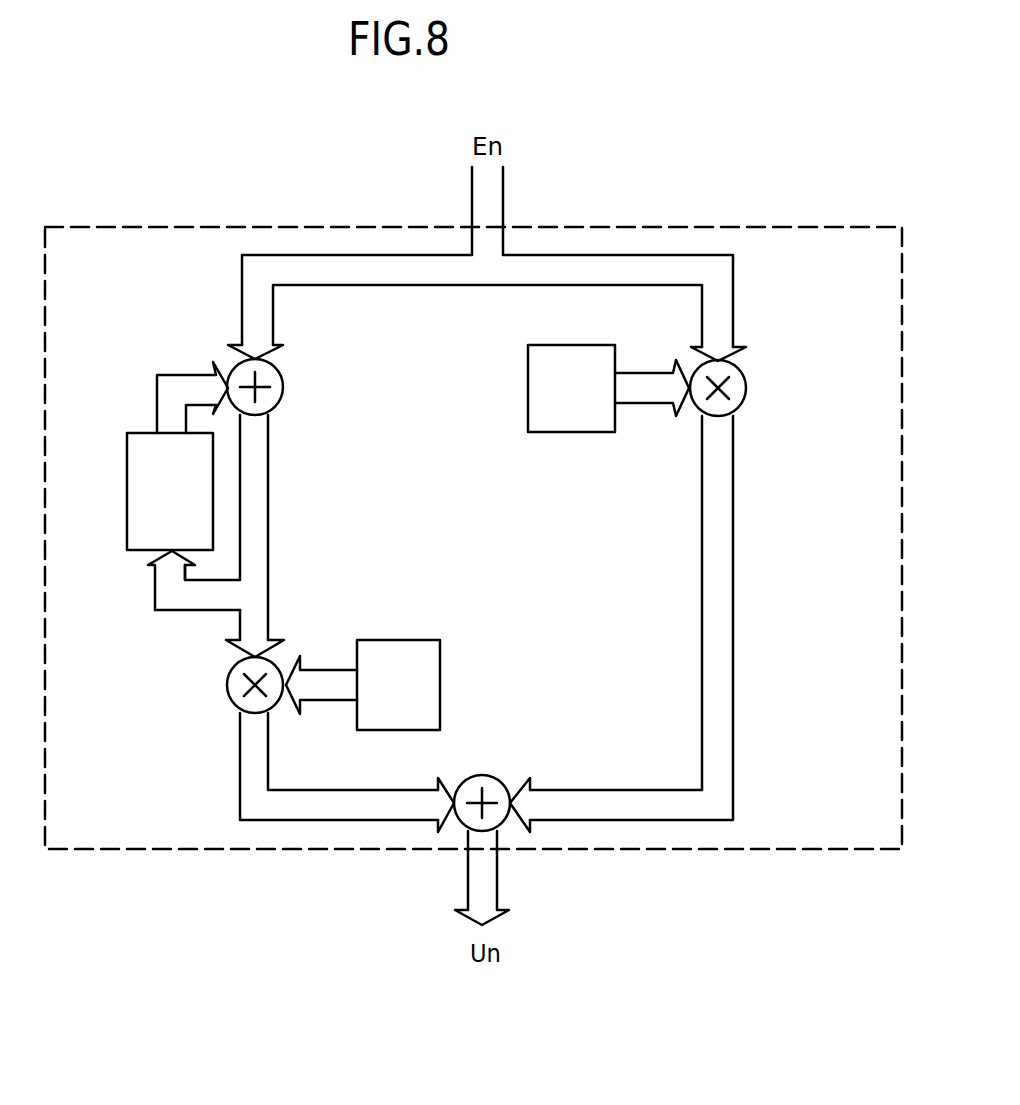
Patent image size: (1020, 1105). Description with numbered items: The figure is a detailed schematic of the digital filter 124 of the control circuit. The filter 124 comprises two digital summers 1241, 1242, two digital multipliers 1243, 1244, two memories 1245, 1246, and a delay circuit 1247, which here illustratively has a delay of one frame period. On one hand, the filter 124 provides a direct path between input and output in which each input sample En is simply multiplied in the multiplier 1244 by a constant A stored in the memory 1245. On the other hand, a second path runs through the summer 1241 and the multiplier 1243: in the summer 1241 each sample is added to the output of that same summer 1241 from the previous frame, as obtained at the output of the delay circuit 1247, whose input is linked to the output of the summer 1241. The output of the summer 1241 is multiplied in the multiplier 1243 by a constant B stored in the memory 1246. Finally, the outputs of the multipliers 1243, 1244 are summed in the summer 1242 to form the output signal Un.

The digital filter 124 is at (902, 252).
The digital summer 1241 is at (284, 383).
The digital summer 1242 is at (488, 783).
The digital multiplier 1243 is at (233, 697).
The digital multiplier 1244 is at (744, 378).
The memory 1245 is at (541, 353).
The memory 1246 is at (393, 650).
The delay circuit 1247 is at (137, 445).